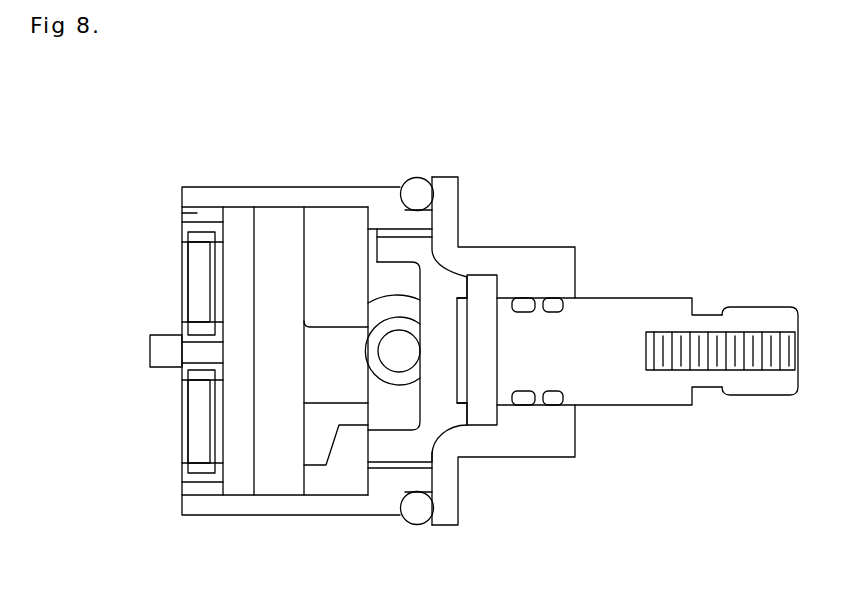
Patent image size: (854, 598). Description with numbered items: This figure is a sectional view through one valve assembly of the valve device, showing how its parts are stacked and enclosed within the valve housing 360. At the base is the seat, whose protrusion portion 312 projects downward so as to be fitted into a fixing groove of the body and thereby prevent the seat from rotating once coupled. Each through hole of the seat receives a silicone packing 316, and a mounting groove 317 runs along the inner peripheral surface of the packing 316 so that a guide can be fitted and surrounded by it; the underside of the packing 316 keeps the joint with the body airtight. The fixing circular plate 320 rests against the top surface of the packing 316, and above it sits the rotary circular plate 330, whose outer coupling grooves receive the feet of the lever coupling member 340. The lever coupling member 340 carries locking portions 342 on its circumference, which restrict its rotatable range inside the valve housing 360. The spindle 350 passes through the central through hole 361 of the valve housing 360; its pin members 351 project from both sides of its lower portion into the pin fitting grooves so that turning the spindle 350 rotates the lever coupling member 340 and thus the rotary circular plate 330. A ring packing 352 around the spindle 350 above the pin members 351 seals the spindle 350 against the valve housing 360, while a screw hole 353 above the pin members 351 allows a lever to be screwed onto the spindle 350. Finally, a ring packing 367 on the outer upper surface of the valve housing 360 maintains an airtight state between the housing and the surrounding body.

The protrusion portion 312 is at (150, 352).
The packing 316 is at (182, 229).
The mounting groove 317 is at (203, 247).
The fixing circular plate 320 is at (197, 214).
The rotary circular plate 330 is at (275, 480).
The lever coupling member 340 is at (397, 447).
The locking portions 342 is at (382, 314).
The spindle 350 is at (752, 305).
The pin members 351 is at (485, 295).
The ring packing 352 is at (550, 298).
The screw hole 353 is at (735, 357).
The valve housing 360 is at (284, 187).
The central through hole 361 is at (575, 392).
The ring packing 367 is at (420, 192).